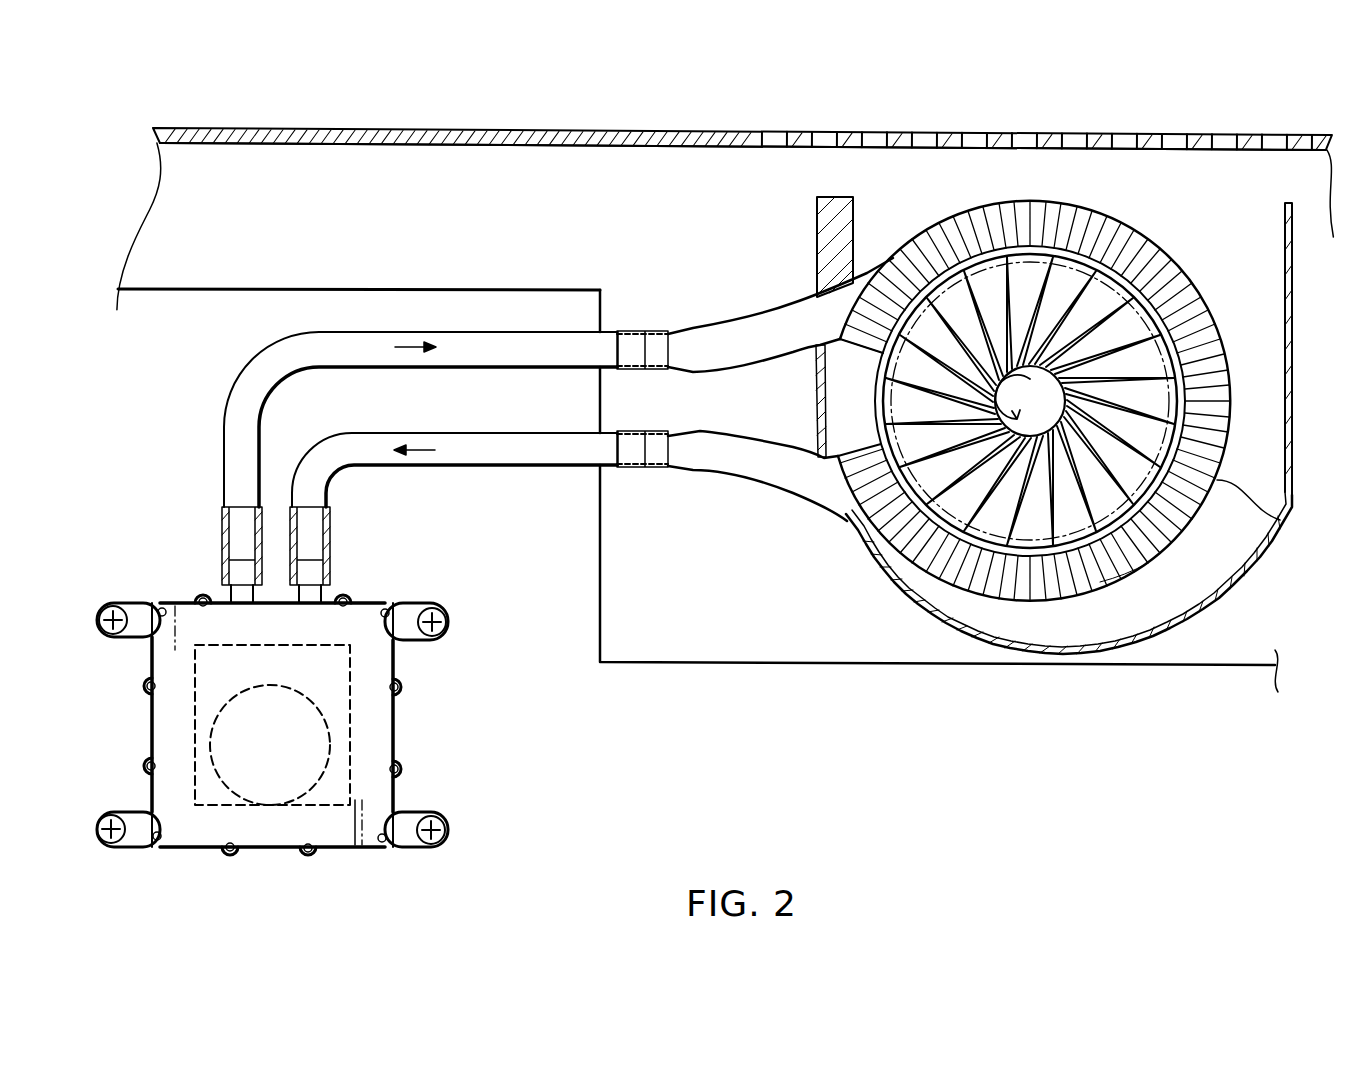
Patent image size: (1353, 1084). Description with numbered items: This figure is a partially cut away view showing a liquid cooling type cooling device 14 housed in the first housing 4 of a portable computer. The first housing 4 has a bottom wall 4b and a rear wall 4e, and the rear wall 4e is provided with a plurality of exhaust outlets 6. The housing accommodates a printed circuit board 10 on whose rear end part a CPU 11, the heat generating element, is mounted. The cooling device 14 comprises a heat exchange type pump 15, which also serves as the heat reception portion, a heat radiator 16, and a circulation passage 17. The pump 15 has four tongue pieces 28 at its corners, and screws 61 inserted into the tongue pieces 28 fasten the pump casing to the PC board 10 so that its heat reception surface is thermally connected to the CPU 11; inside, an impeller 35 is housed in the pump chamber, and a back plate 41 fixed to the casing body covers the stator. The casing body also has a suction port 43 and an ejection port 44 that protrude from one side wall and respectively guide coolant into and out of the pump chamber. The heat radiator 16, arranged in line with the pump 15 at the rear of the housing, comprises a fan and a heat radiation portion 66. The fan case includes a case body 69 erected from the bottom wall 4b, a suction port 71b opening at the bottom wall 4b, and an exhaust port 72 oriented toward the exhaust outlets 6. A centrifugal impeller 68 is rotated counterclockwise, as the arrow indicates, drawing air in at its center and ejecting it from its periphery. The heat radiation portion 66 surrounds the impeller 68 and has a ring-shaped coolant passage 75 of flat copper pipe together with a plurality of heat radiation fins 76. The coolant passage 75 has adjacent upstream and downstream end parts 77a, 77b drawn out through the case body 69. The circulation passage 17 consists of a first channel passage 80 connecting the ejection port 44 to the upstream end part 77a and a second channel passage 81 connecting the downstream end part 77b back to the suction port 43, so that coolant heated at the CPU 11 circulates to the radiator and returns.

The first housing 4 is at (195, 130).
The rear wall 4e is at (432, 130).
The bottom wall 4b is at (183, 278).
The exhaust outlets 6 is at (1112, 132).
The printed circuit board 10 is at (553, 307).
The circulation passage 17 is at (420, 354).
The first channel passage 80 is at (322, 340).
The second channel passage 81 is at (377, 447).
The upstream end part 77a is at (655, 345).
The downstream end part 77b is at (660, 470).
The coolant passage 75 is at (787, 487).
The exhaust port 72 is at (855, 215).
The impeller 68 is at (1110, 290).
The suction port 71b is at (1180, 298).
The heat radiation fins 76 is at (1130, 548).
The case body 69 is at (1295, 325).
The heat radiation portion 66 is at (1280, 520).
The heat radiator 16 is at (964, 644).
The cooling device 14 is at (268, 858).
The heat exchange type pump 15 is at (385, 600).
The tongue pieces 28 is at (146, 608).
The screws 61 is at (447, 622).
The CPU 11 is at (352, 702).
The impeller 35 is at (330, 736).
The back plate 41 is at (370, 795).
The suction port 43 is at (305, 578).
The ejection port 44 is at (240, 578).